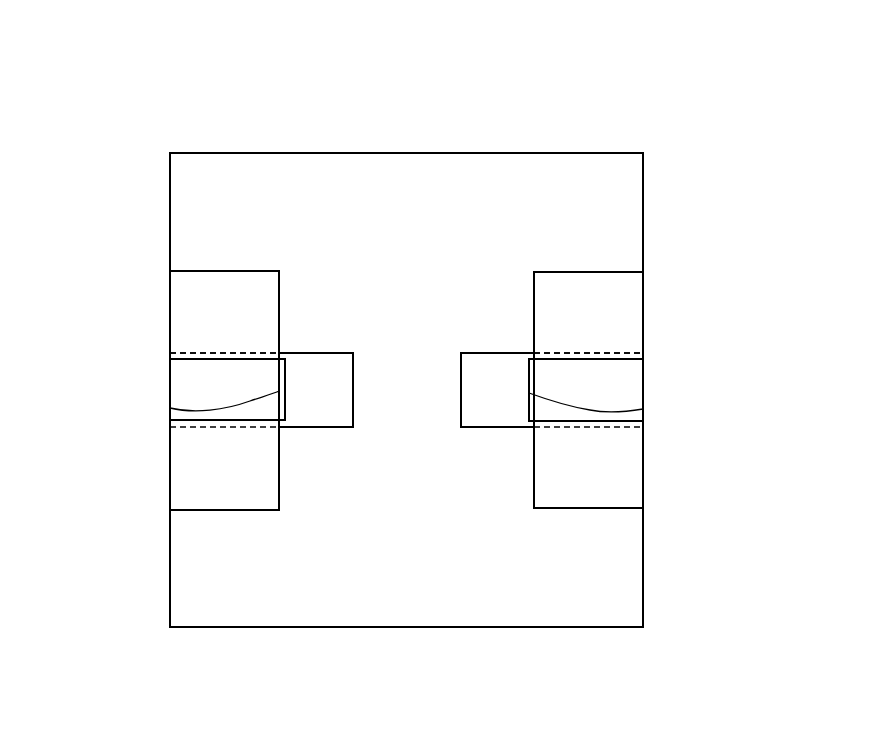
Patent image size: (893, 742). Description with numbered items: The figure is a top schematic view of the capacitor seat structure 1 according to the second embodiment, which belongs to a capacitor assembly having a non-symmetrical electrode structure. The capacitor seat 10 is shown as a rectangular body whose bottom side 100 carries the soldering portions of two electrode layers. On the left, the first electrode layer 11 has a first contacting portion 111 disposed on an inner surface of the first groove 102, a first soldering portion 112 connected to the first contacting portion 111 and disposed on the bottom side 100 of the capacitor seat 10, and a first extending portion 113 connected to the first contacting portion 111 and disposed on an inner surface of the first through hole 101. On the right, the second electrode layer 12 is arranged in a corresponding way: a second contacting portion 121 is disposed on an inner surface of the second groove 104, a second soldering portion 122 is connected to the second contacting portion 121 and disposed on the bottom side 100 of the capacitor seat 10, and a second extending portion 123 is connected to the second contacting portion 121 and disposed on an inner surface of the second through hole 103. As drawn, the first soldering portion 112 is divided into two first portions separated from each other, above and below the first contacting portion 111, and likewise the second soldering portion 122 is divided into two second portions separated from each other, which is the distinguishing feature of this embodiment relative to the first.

The capacitor seat structure 1 is at (81, 48).
The capacitor seat 10 is at (470, 153).
The bottom side 100 is at (375, 183).
The first through hole 101 is at (313, 375).
The first groove 102 is at (238, 350).
The second through hole 103 is at (498, 374).
The second groove 104 is at (573, 350).
The first electrode layer 11 is at (88, 312).
The first contacting portion 111 is at (195, 381).
The first soldering portion 112 is at (200, 323).
The first extending portion 113 is at (170, 408).
The second electrode layer 12 is at (728, 312).
The second contacting portion 121 is at (617, 380).
The second soldering portion 122 is at (612, 324).
The second extending portion 123 is at (643, 409).